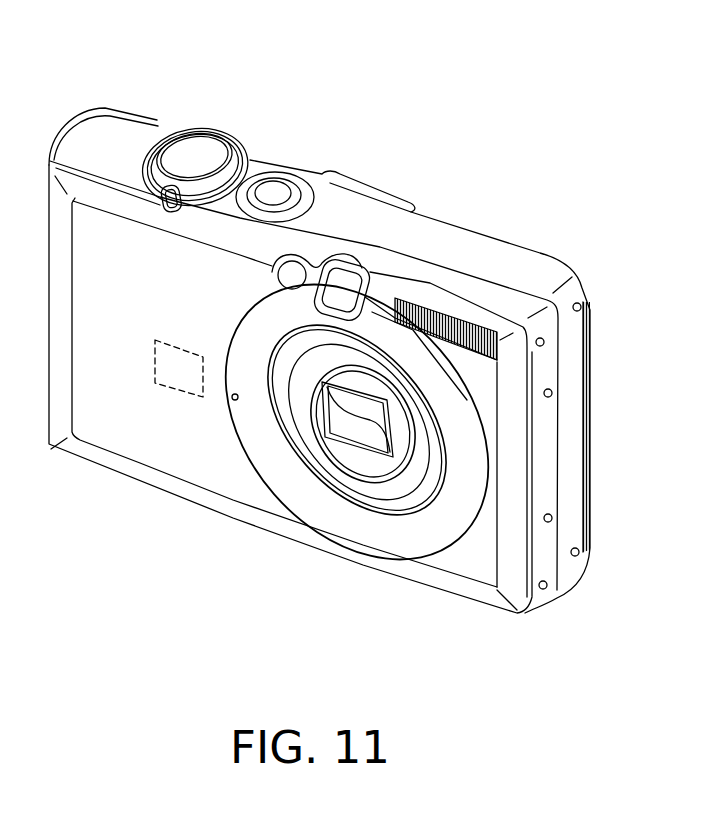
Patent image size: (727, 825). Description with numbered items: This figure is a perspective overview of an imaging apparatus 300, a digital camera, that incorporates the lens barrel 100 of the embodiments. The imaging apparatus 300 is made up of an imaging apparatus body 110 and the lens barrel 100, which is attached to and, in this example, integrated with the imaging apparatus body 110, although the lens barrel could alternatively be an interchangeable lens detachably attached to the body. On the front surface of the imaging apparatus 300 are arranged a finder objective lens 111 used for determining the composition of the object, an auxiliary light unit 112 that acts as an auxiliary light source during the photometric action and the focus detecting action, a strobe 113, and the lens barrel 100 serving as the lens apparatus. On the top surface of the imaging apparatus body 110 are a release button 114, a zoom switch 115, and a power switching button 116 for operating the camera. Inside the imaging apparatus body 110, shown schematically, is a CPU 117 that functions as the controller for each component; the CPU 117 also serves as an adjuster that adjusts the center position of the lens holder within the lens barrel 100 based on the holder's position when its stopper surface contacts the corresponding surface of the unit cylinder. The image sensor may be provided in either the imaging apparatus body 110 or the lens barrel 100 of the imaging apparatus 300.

The imaging apparatus 300 is at (455, 98).
The lens barrel 100 is at (360, 477).
The imaging apparatus body 110 is at (167, 463).
The finder objective lens 111 is at (347, 292).
The auxiliary light unit 112 is at (303, 262).
The strobe 113 is at (445, 300).
The release button 114 is at (202, 147).
The zoom switch 115 is at (240, 147).
The power switching button 116 is at (273, 193).
The CPU 117 is at (190, 392).